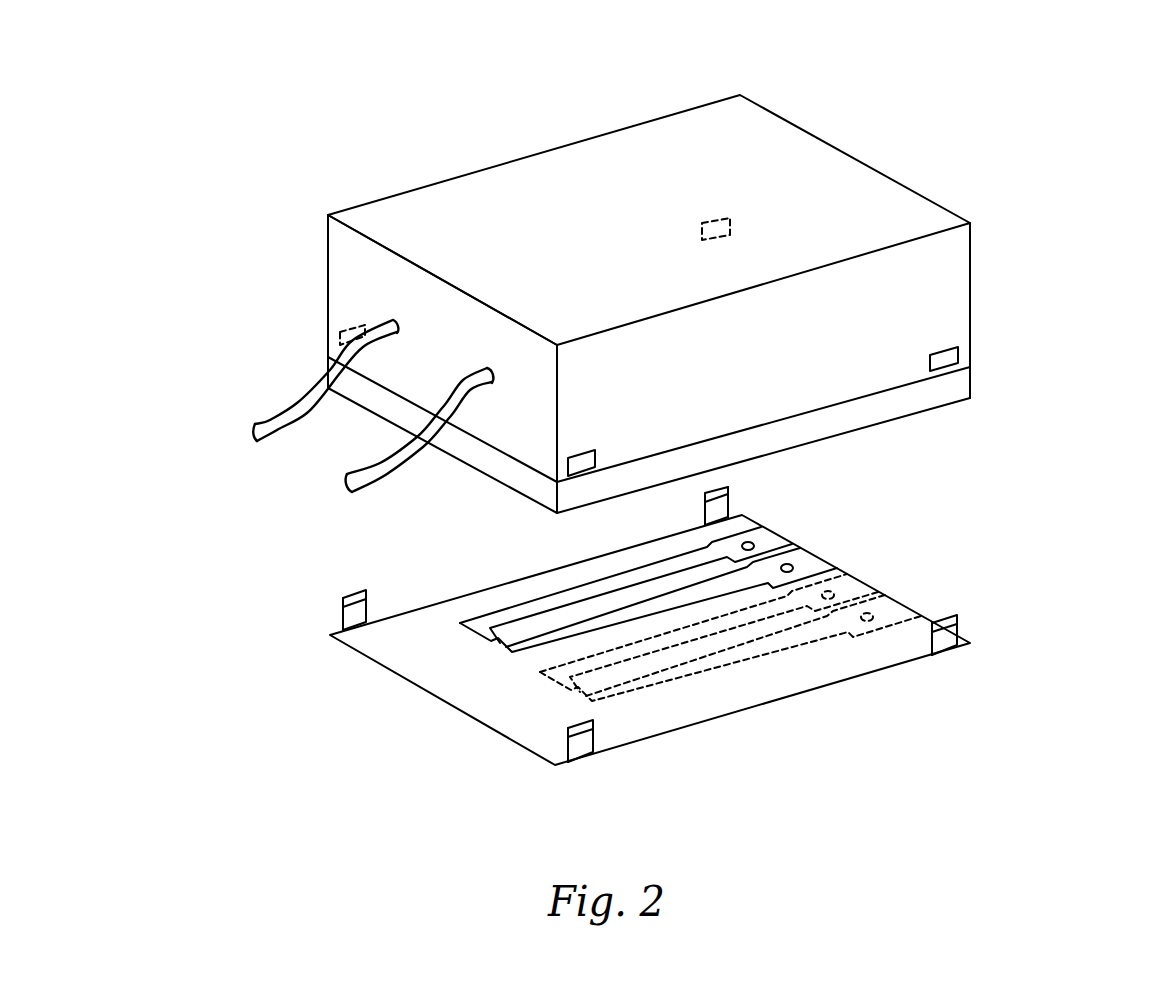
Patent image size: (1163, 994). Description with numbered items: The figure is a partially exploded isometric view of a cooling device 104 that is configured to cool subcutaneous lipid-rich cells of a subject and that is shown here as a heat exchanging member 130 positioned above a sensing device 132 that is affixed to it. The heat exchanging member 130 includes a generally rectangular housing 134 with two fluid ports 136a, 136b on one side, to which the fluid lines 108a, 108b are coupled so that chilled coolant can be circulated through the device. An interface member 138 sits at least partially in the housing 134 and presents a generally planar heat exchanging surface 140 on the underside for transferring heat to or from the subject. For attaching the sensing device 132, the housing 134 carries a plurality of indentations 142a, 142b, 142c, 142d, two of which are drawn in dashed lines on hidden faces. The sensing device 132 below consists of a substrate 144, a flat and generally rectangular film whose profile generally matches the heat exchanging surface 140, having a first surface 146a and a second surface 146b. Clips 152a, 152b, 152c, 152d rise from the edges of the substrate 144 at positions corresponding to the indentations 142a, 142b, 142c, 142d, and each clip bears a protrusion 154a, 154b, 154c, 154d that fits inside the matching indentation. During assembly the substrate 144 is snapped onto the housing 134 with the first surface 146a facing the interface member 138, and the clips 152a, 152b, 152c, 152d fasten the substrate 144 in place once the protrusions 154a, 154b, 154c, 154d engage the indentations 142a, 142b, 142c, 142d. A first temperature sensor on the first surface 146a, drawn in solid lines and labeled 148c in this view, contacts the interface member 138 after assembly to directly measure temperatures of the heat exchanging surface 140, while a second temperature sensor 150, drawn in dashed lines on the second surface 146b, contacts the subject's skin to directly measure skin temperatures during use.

The cooling device 104 is at (1047, 104).
The heat exchanging member 130 is at (1018, 233).
The sensing device 132 is at (800, 764).
The housing 134 is at (326, 214).
The fluid port 136a is at (395, 318).
The fluid port 136b is at (490, 368).
The interface member 138 is at (328, 371).
The heat exchanging surface 140 is at (490, 481).
The indentation 142a is at (596, 466).
The indentation 142b is at (958, 358).
The indentation 142c is at (339, 327).
The indentation 142d is at (732, 222).
The fluid line 108a is at (269, 419).
The fluid line 108b is at (353, 477).
The substrate 144 is at (862, 680).
The first surface 146a is at (618, 725).
The second surface 146b is at (665, 678).
The mounting bracket 148c is at (458, 607).
The second temperature sensor 150 is at (735, 680).
The clip 152a is at (582, 724).
The clip 152b is at (960, 630).
The clip 152c is at (348, 592).
The clip 152d is at (729, 489).
The protrusion 154a is at (566, 745).
The protrusion 154b is at (932, 627).
The protrusion 154c is at (350, 612).
The protrusion 154d is at (733, 505).